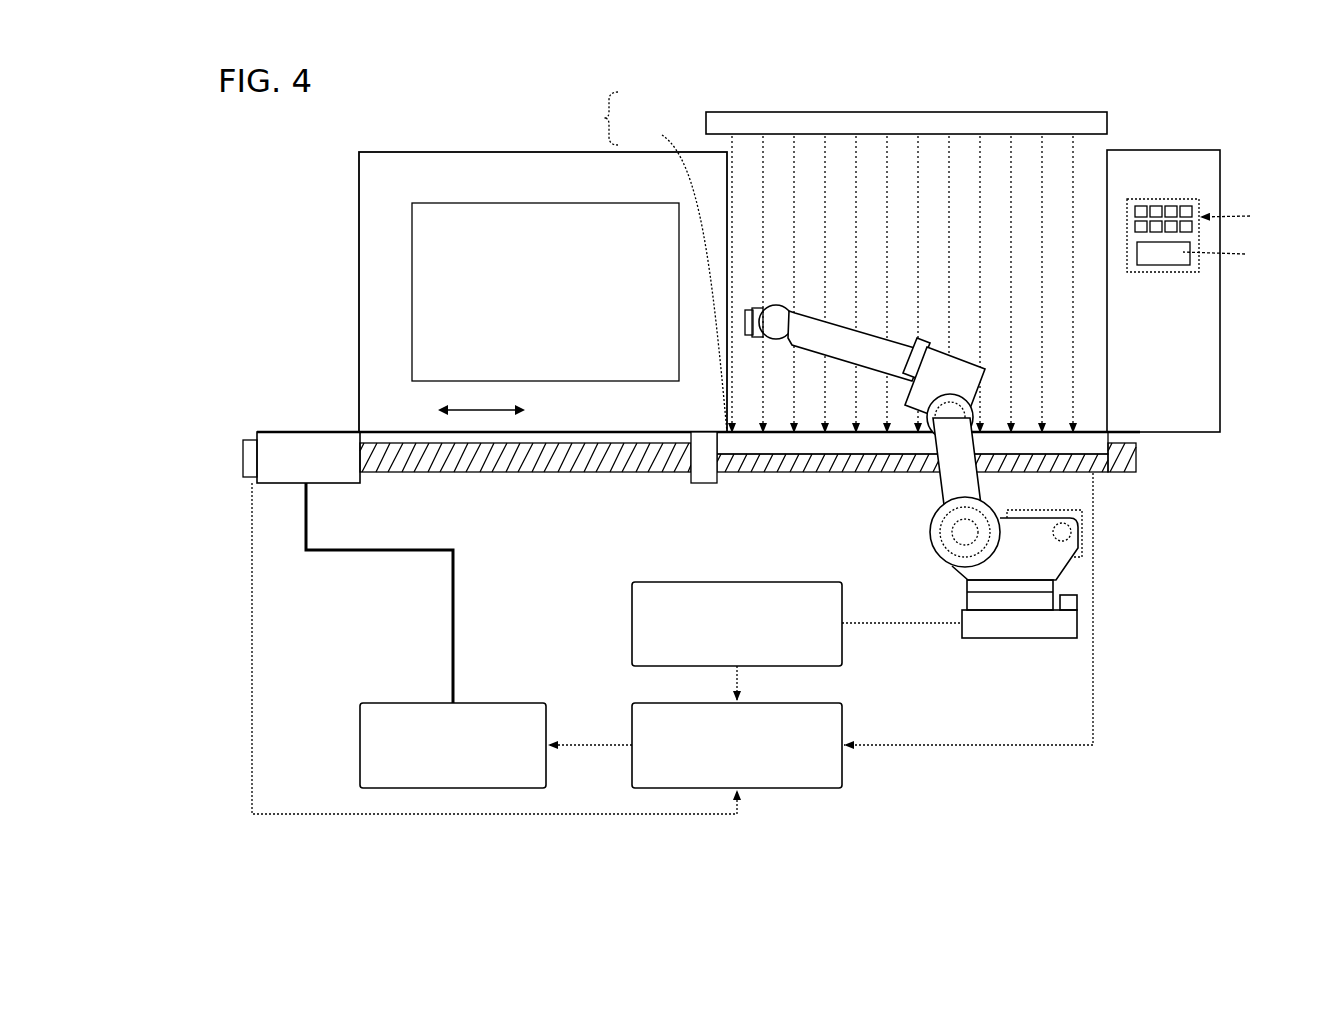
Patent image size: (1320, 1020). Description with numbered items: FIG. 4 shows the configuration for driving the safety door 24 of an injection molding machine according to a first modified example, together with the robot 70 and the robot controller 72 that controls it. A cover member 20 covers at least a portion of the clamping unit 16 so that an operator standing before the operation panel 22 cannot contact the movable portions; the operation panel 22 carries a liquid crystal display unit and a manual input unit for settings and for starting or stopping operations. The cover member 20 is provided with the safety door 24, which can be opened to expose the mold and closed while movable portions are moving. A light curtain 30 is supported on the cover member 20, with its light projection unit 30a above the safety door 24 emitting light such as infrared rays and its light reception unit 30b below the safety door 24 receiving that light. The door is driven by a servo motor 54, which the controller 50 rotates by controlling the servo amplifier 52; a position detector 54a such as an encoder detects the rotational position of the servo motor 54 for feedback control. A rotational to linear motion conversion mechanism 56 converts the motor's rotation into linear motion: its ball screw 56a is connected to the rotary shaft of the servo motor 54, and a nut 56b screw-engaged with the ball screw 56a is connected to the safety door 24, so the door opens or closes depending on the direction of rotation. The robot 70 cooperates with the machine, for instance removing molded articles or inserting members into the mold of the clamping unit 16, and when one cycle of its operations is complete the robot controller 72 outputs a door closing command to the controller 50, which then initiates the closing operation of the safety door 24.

The clamping unit 16 is at (805, 110).
The cover member 20 is at (401, 150).
The safety door 24 is at (517, 150).
The light curtain 30 is at (599, 118).
The light projection unit 30a is at (710, 122).
The light reception unit 30b is at (675, 276).
The operation panel 22 is at (1177, 197).
The servo motor 54 is at (290, 440).
The position detector 54a is at (243, 455).
The rotational to linear motion conversion mechanism 56 is at (748, 501).
The ball screw 56a is at (653, 478).
The nut 56b is at (713, 483).
The servo amplifier 52 is at (358, 733).
The controller 50 is at (845, 724).
The robot controller 72 is at (780, 581).
The robot 70 is at (1027, 630).